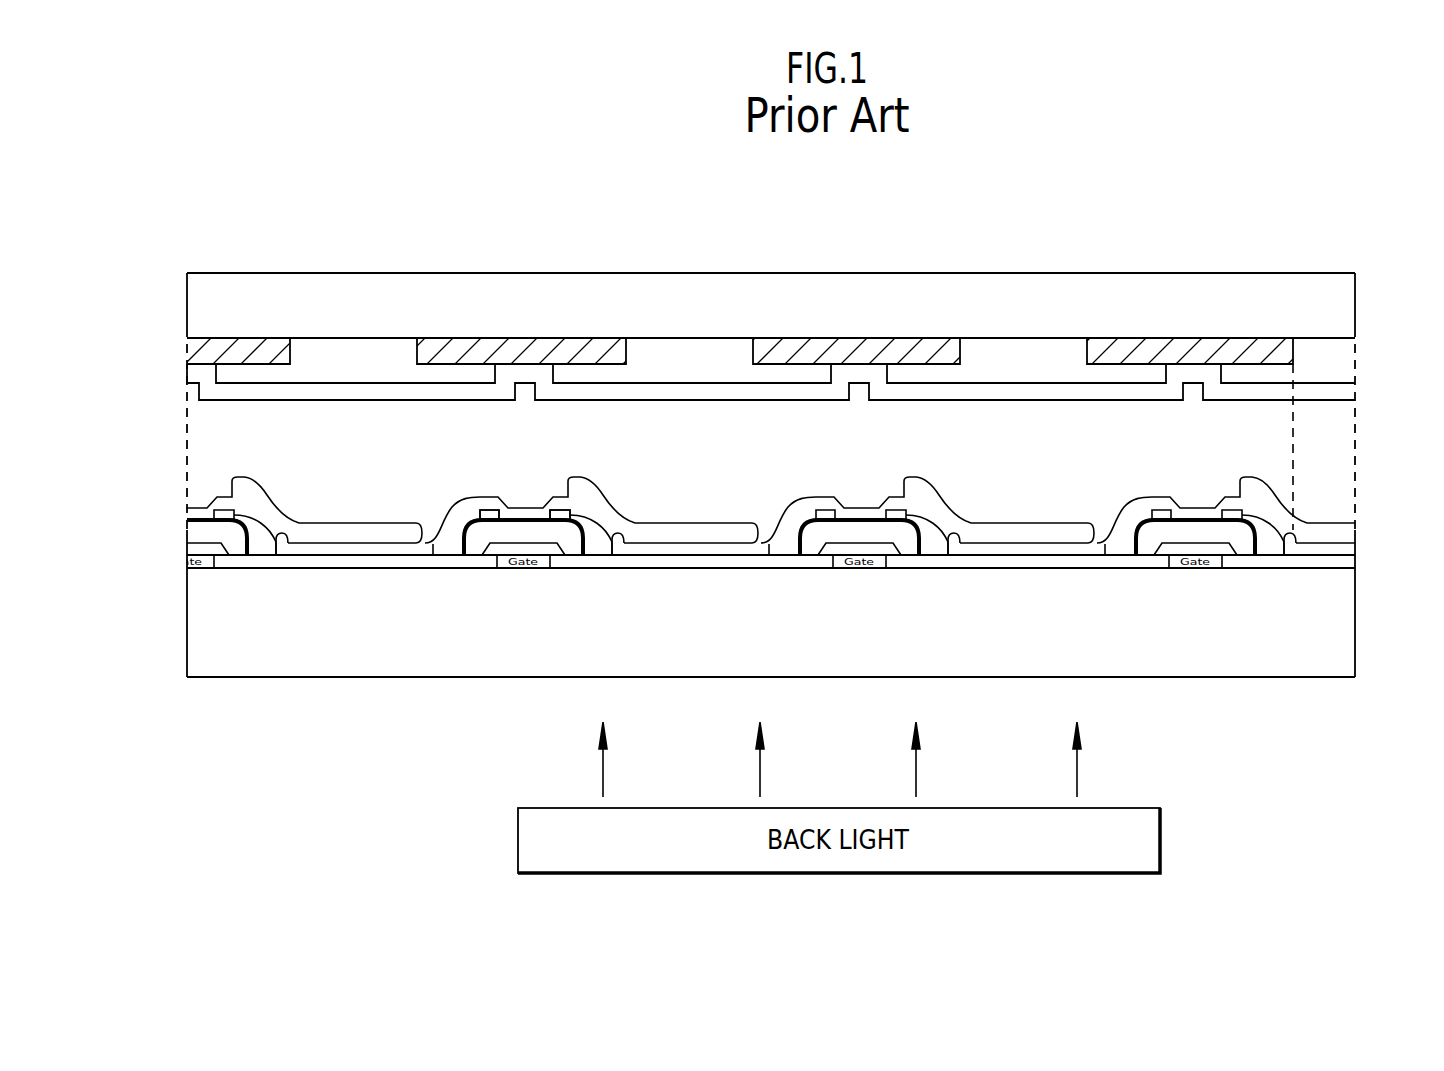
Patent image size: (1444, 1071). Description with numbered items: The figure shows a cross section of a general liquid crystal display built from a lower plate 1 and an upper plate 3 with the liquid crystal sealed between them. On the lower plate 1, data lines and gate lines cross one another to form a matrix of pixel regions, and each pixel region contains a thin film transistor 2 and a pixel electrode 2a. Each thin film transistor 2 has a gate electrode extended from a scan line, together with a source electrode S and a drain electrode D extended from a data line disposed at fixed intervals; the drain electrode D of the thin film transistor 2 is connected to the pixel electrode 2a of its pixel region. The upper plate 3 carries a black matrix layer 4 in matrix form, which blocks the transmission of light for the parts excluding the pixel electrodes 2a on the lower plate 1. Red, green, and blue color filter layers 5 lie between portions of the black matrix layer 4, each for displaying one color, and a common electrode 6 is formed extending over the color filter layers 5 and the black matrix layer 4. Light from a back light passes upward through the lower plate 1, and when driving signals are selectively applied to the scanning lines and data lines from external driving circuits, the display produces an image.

The lower plate 1 is at (1340, 628).
The thin film transistor 2 is at (565, 580).
The pixel electrode 2a is at (683, 533).
The upper plate 3 is at (1337, 310).
The black matrix layer 4 is at (1218, 345).
The color filter layer 5 is at (1048, 360).
The common electrode 6 is at (1337, 390).
The source electrode S is at (479, 510).
The drain electrode D is at (562, 510).